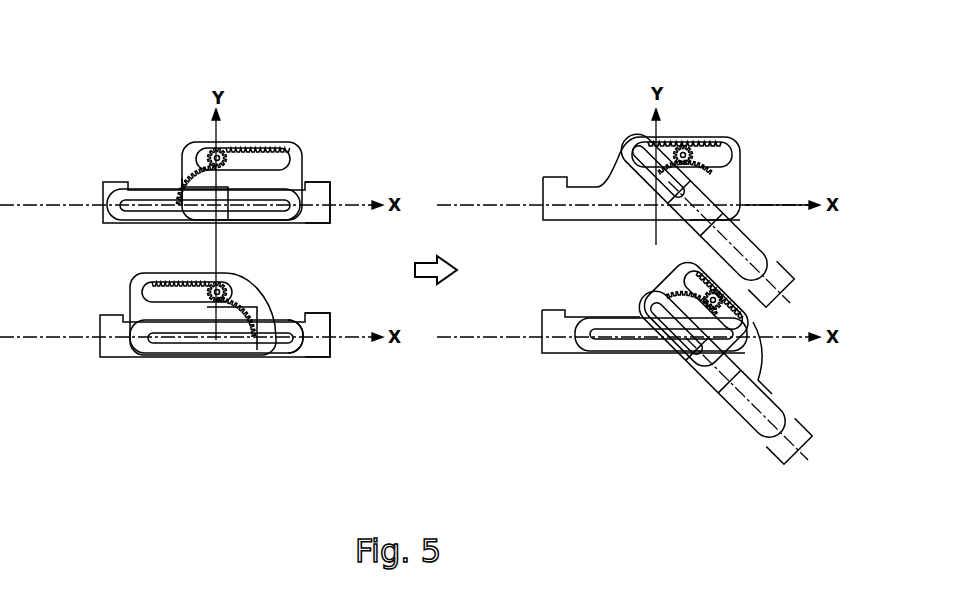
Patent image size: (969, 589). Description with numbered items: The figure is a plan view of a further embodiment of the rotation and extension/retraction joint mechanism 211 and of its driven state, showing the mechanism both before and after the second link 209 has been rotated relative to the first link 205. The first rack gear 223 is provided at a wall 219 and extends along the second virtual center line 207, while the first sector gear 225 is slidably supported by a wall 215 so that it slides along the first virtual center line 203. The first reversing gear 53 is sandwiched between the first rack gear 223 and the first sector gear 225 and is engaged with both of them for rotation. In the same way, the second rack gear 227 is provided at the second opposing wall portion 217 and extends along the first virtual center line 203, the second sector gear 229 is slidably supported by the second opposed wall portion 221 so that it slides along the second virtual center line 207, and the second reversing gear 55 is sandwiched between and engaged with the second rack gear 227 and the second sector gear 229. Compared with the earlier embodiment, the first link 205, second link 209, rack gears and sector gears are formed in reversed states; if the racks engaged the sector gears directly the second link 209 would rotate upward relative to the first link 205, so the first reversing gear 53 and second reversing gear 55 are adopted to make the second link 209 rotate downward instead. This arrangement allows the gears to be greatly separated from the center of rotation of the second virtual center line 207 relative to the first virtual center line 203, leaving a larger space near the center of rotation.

The first link 205 is at (103, 183).
The second link 209 is at (330, 190).
The rotation and extension/retraction joint mechanism 211 is at (302, 146).
The wall 215 is at (320, 358).
The second opposing wall portion 217 is at (172, 186).
The wall 219 is at (117, 358).
The second opposed wall portion 221 is at (150, 189).
The first rack gear 223 is at (157, 358).
The first sector gear 225 is at (277, 358).
The second rack gear 227 is at (270, 148).
The second sector gear 229 is at (181, 178).
The first reversing gear 53 is at (223, 284).
The second reversing gear 55 is at (221, 150).
The first virtual center line 203 is at (777, 200).
The second virtual center line 207 is at (790, 310).